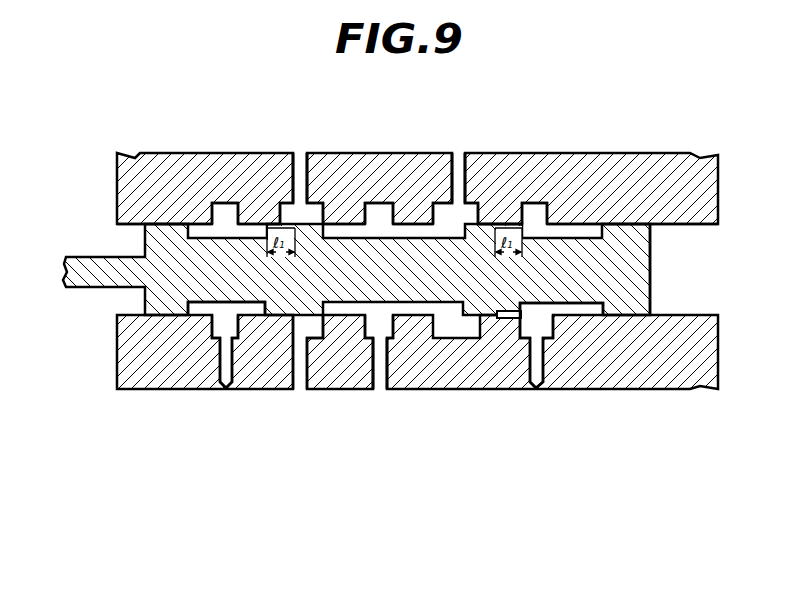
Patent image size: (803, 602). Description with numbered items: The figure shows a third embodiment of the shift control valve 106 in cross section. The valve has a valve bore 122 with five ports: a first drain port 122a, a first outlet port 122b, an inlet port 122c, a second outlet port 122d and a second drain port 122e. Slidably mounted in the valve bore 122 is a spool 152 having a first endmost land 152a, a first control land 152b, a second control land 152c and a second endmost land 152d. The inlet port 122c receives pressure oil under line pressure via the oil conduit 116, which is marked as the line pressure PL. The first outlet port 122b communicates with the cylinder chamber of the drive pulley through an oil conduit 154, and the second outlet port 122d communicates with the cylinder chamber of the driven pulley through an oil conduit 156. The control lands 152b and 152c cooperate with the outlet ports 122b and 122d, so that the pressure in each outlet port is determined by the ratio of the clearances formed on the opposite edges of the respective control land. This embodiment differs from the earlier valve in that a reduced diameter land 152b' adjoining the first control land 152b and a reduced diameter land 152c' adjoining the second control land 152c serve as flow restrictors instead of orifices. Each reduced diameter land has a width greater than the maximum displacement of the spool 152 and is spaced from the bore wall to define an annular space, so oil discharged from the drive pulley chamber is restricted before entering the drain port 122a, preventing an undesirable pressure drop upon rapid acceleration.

The shift control valve 106 is at (537, 155).
The oil conduit 116 is at (473, 307).
The valve bore 122 is at (200, 227).
The first drain port 122a is at (226, 207).
The first outlet port 122b is at (285, 200).
The inlet port 122c is at (382, 207).
The second outlet port 122d is at (470, 208).
The second drain port 122e is at (540, 207).
The oil conduit 154 is at (304, 172).
The oil conduit 156 is at (457, 170).
The spool 152 is at (200, 290).
The first endmost land 152a is at (157, 320).
The first control land 152b is at (351, 372).
The reduced diameter land 152b' is at (290, 369).
The second control land 152c is at (505, 367).
The reduced diameter land 152c' is at (556, 369).
The second endmost land 152d is at (630, 305).
The load pressure port PL is at (387, 362).